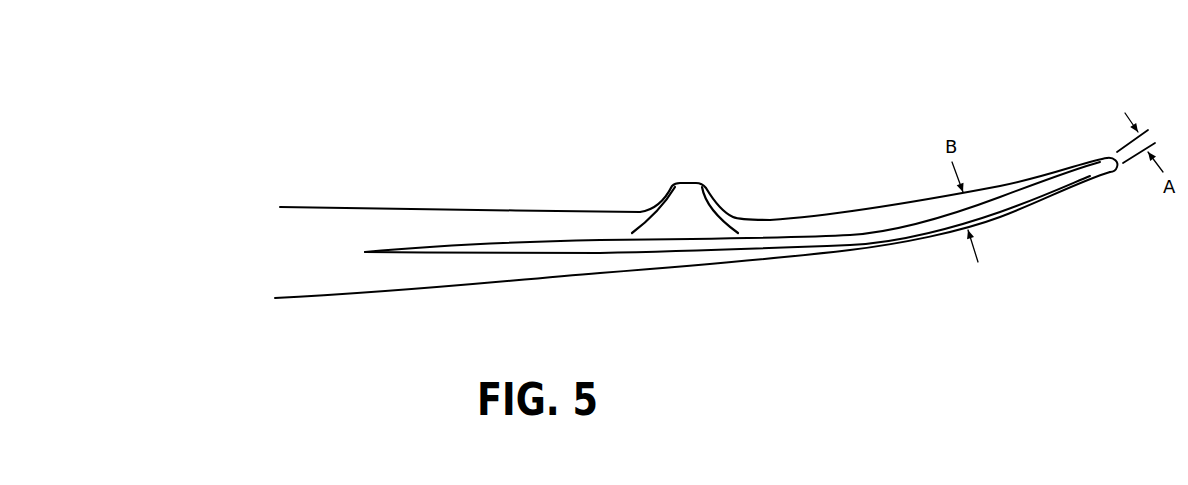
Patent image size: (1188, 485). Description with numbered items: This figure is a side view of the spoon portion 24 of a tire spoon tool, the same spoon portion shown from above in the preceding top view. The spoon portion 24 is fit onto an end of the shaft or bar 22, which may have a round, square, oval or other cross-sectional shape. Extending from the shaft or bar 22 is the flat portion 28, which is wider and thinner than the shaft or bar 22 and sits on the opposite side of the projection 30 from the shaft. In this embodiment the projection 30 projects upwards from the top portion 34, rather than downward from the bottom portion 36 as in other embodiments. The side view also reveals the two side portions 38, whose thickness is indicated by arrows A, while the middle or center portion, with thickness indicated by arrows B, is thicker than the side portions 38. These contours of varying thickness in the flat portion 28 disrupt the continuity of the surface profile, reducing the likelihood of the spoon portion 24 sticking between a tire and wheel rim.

The shaft or bar 22 is at (288, 213).
The spoon portion 24 is at (967, 103).
The flat portion 28 is at (873, 140).
The projection 30 is at (688, 197).
The top portion 34 is at (770, 225).
The bottom portion 36 is at (865, 250).
The side portion 38 is at (797, 245).